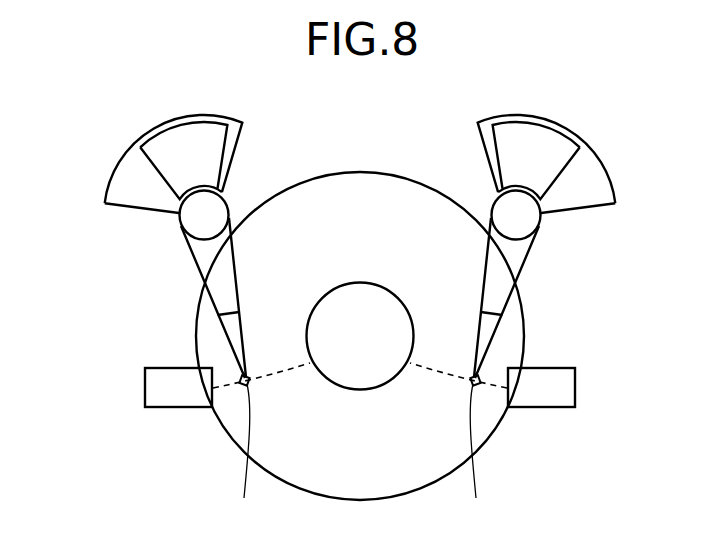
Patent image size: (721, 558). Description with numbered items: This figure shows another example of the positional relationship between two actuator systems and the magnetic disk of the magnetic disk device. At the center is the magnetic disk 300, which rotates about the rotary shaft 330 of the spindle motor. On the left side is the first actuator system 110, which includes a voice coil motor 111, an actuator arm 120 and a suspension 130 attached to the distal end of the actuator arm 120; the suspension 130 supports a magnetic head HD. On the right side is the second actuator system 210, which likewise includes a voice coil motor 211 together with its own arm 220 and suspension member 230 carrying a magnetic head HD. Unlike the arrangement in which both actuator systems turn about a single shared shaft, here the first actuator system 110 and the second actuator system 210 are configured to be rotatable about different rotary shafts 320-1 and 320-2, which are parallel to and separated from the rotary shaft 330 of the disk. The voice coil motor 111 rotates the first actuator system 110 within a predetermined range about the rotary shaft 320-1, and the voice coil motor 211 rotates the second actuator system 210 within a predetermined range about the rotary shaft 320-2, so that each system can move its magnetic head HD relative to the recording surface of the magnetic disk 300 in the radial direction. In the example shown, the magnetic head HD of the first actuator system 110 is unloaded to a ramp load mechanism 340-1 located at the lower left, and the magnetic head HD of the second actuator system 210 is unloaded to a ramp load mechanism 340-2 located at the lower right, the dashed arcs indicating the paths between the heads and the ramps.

The first actuator system 110 is at (133, 150).
The voice coil motor 111 is at (180, 168).
The actuator arm 120 is at (223, 288).
The suspension 130 is at (233, 332).
The second actuator system 210 is at (587, 150).
The voice coil motor 211 is at (540, 168).
The second arm 220 is at (497, 288).
The second arm tip member 230 is at (487, 332).
The magnetic disk 300 is at (433, 190).
The rotary shaft 320-1 is at (187, 223).
The rotary shaft 320-2 is at (533, 223).
The rotary shaft 330 is at (359, 312).
The ramp load mechanism 340-1 is at (180, 408).
The ramp load mechanism 340-2 is at (540, 408).
The magnetic head HD is at (360, 453).